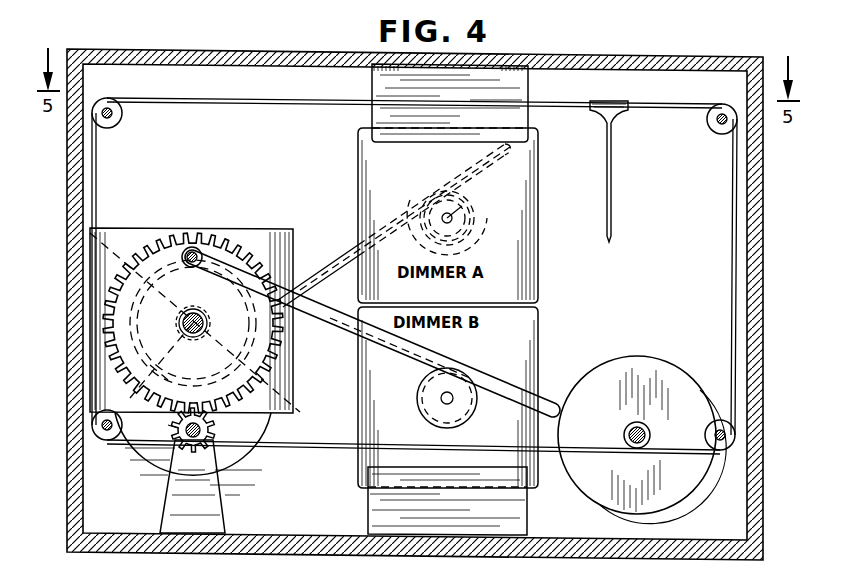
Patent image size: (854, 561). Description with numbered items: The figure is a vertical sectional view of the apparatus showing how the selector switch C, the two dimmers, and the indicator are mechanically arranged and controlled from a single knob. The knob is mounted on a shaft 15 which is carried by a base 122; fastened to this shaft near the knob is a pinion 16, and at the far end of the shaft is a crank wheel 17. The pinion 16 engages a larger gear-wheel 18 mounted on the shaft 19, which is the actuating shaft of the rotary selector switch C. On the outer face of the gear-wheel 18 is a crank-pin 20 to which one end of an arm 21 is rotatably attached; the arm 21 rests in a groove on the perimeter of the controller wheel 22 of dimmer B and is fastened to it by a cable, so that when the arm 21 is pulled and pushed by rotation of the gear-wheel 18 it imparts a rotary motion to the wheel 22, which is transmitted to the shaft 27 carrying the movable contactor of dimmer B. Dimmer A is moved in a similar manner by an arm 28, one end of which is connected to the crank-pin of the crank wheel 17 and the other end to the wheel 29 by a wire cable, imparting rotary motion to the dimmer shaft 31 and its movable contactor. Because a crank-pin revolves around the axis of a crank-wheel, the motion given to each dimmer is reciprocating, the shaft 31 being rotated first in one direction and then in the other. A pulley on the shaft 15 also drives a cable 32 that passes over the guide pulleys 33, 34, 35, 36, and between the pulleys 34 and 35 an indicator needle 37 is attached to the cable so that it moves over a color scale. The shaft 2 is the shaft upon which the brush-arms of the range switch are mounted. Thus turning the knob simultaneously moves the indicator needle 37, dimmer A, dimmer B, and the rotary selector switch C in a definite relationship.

The shaft 2 is at (630, 430).
The shaft 15 is at (193, 453).
The pinion 16 is at (170, 428).
The crank wheel 17 is at (252, 480).
The gear-wheel 18 is at (150, 305).
The shaft 19 is at (185, 323).
The crank-pin 20 is at (193, 246).
The arm 21 is at (318, 314).
The controller wheel 22 is at (417, 398).
The shaft 27 is at (452, 401).
The arm 28 is at (310, 268).
The wheel 29 is at (459, 227).
The dimmer shaft 31 is at (460, 210).
The cable 32 is at (288, 104).
The guide pulley 33 is at (722, 452).
The guide pulley 34 is at (717, 131).
The guide pulley 35 is at (119, 118).
The guide pulley 36 is at (104, 438).
The indicator needle 37 is at (612, 178).
The base 122 is at (185, 514).
The selector switch C is at (265, 243).